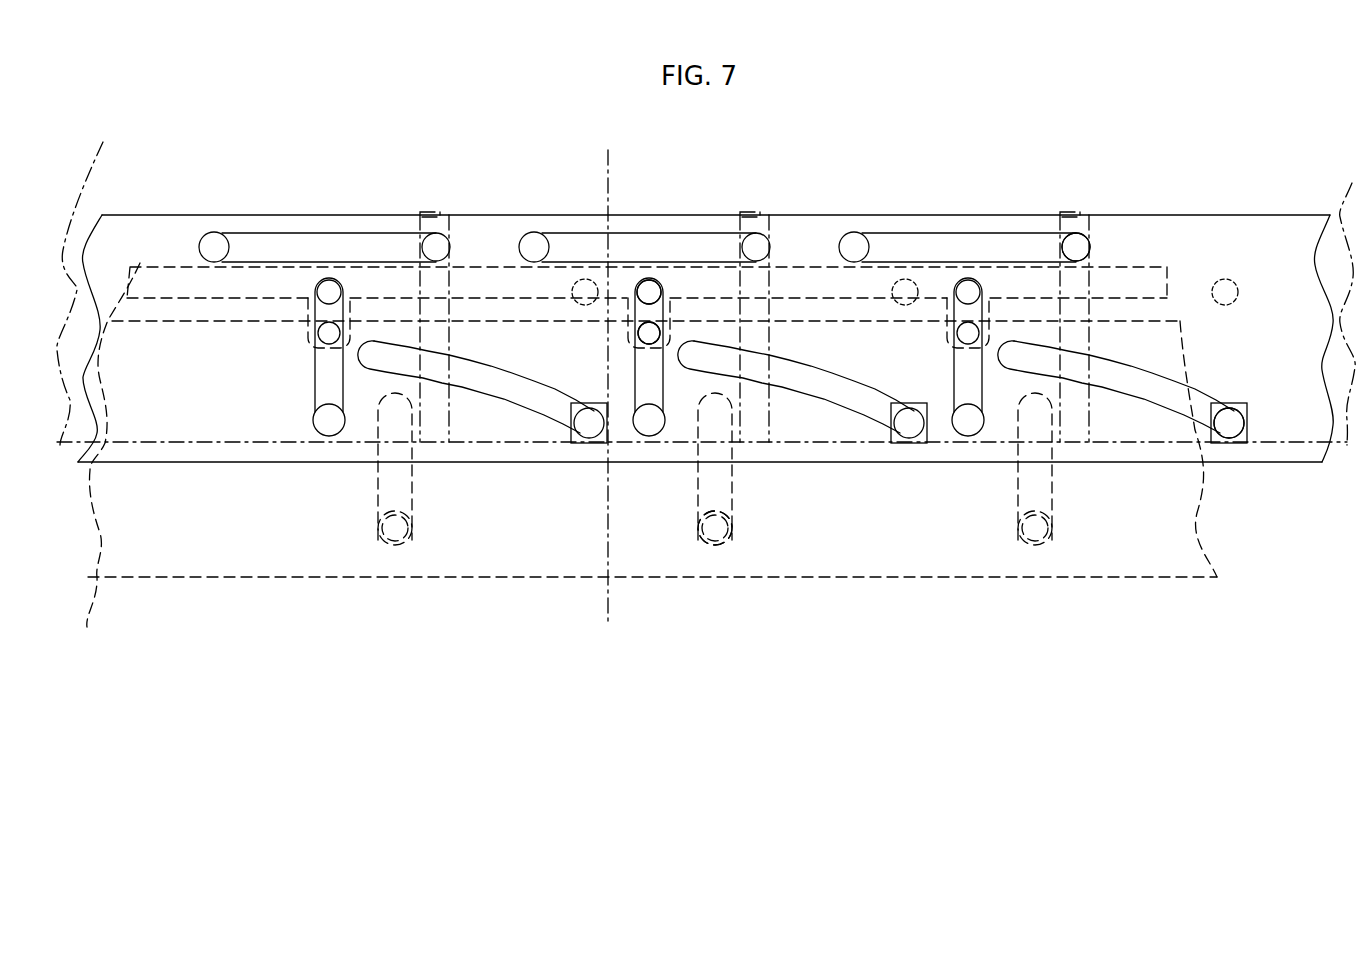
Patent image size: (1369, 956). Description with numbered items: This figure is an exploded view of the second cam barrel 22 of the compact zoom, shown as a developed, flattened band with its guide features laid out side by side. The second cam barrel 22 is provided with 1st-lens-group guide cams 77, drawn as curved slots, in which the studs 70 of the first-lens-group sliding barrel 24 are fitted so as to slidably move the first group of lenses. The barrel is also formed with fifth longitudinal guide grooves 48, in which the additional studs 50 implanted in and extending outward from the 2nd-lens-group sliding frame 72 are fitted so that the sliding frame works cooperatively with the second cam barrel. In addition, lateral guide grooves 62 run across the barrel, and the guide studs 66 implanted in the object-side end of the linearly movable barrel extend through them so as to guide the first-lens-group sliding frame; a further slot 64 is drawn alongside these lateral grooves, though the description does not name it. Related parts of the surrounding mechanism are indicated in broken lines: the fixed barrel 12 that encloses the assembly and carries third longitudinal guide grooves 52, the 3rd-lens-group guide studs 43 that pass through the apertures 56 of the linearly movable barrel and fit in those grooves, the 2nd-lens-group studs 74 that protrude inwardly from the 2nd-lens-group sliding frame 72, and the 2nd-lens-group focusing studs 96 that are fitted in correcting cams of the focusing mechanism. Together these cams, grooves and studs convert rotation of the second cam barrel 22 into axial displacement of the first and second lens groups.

The fixed barrel 12 is at (641, 462).
The second cam barrel 22 is at (137, 247).
The first-lens-group sliding barrel 24 is at (110, 180).
The 3rd-lens-group guide studs 43 is at (718, 540).
The fifth longitudinal guide grooves 48 is at (643, 355).
The additional studs 50 is at (650, 290).
The third longitudinal guide grooves 52 is at (375, 503).
The apertures 56 is at (728, 473).
The lateral guide grooves 62 is at (963, 237).
The guide slot 64 is at (427, 287).
The guide studs 66 is at (1082, 238).
The studs 70 is at (1225, 423).
The 2nd-lens-group sliding frame 72 is at (497, 277).
The 2nd-lens-group studs 74 is at (660, 370).
The 1st-lens-group guide cams 77 is at (1127, 367).
The 2nd-lens-group focusing studs 96 is at (1230, 280).